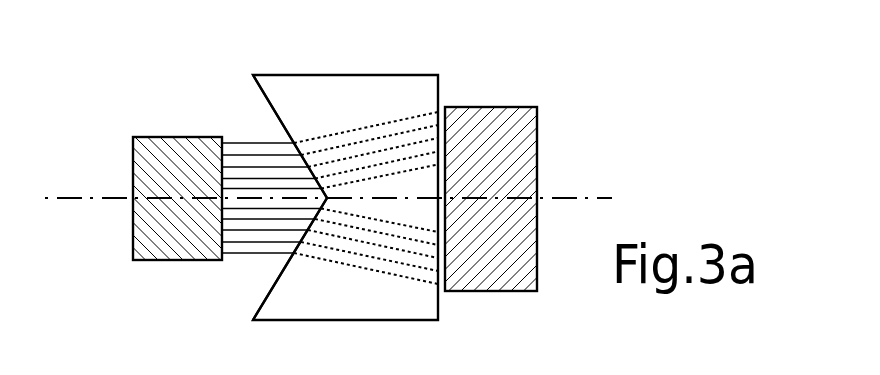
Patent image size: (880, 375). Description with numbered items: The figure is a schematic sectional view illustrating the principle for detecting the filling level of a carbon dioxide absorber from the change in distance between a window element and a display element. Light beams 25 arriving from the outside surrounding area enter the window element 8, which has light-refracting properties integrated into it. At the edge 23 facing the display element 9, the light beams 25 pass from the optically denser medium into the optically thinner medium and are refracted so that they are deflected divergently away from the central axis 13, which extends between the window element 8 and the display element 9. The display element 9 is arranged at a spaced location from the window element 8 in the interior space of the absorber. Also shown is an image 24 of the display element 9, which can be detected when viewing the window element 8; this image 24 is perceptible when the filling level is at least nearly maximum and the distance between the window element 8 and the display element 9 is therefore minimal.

The window element 8 is at (353, 88).
The display element 9 is at (502, 118).
The central axis 13 is at (568, 198).
The edge 23 is at (272, 287).
The image 24 is at (158, 153).
The light beams 25 is at (262, 165).